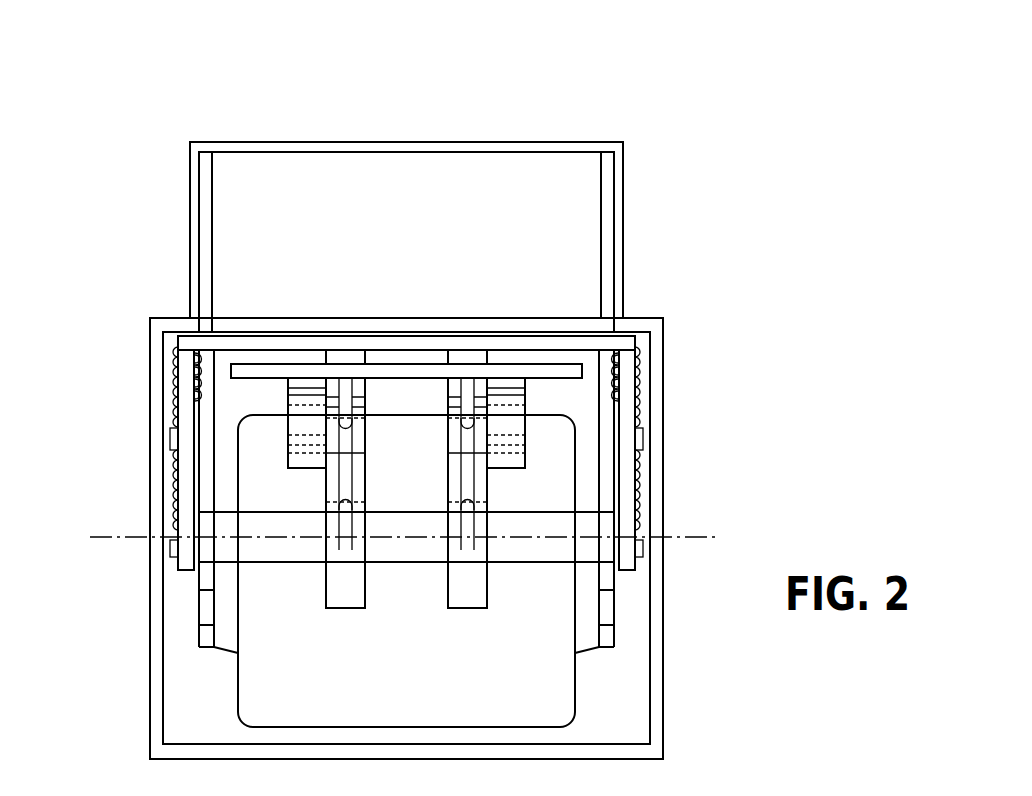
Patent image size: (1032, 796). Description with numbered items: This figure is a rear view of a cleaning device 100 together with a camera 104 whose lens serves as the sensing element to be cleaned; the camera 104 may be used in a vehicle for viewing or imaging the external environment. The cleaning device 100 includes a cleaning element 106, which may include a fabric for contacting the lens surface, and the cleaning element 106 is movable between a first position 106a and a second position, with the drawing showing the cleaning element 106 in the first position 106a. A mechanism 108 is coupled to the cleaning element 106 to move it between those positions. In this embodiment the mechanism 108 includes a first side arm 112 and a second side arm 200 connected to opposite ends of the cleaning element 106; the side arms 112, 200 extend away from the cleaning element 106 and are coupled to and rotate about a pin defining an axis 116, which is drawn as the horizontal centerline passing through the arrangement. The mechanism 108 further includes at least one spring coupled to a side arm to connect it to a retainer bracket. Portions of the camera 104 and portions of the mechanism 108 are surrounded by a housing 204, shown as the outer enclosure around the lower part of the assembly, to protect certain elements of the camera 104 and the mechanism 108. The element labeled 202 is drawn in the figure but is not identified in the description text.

The cleaning device 100 is at (128, 560).
The camera 104 is at (562, 682).
The cleaning element 106 is at (365, 146).
The first position 106a is at (574, 141).
The mechanism 108 is at (148, 398).
The first side arm 112 is at (205, 218).
The axis 116 is at (108, 537).
The second side arm 200 is at (610, 247).
The shaft 202 is at (543, 558).
The housing 204 is at (658, 647).